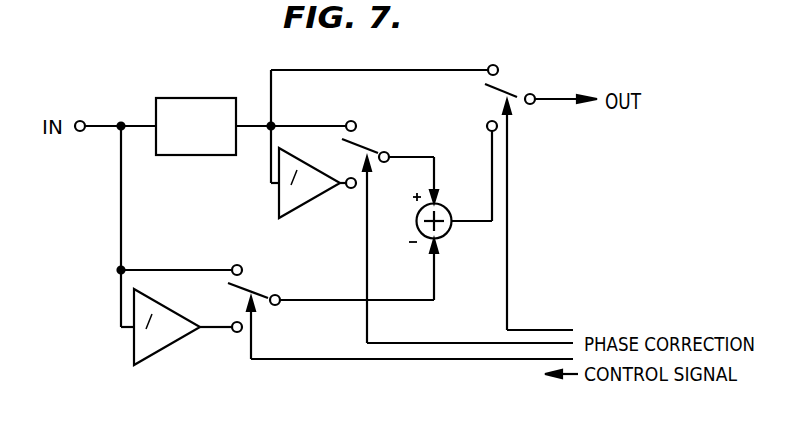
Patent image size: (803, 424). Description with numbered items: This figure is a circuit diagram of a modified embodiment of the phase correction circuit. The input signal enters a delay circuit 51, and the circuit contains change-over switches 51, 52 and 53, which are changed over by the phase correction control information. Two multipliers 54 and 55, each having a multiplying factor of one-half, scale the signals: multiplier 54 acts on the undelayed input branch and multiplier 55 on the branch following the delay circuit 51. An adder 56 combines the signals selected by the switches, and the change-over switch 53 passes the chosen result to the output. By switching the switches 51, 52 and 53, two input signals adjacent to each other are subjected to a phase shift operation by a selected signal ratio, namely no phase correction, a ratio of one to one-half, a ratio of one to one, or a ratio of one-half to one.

The delay circuit / change-over switch 51 is at (202, 97).
The change-over switch 52 is at (364, 143).
The change-over switch 53 is at (504, 82).
The multiplier 54 is at (169, 350).
The multiplier 55 is at (312, 197).
The adder 56 is at (444, 241).